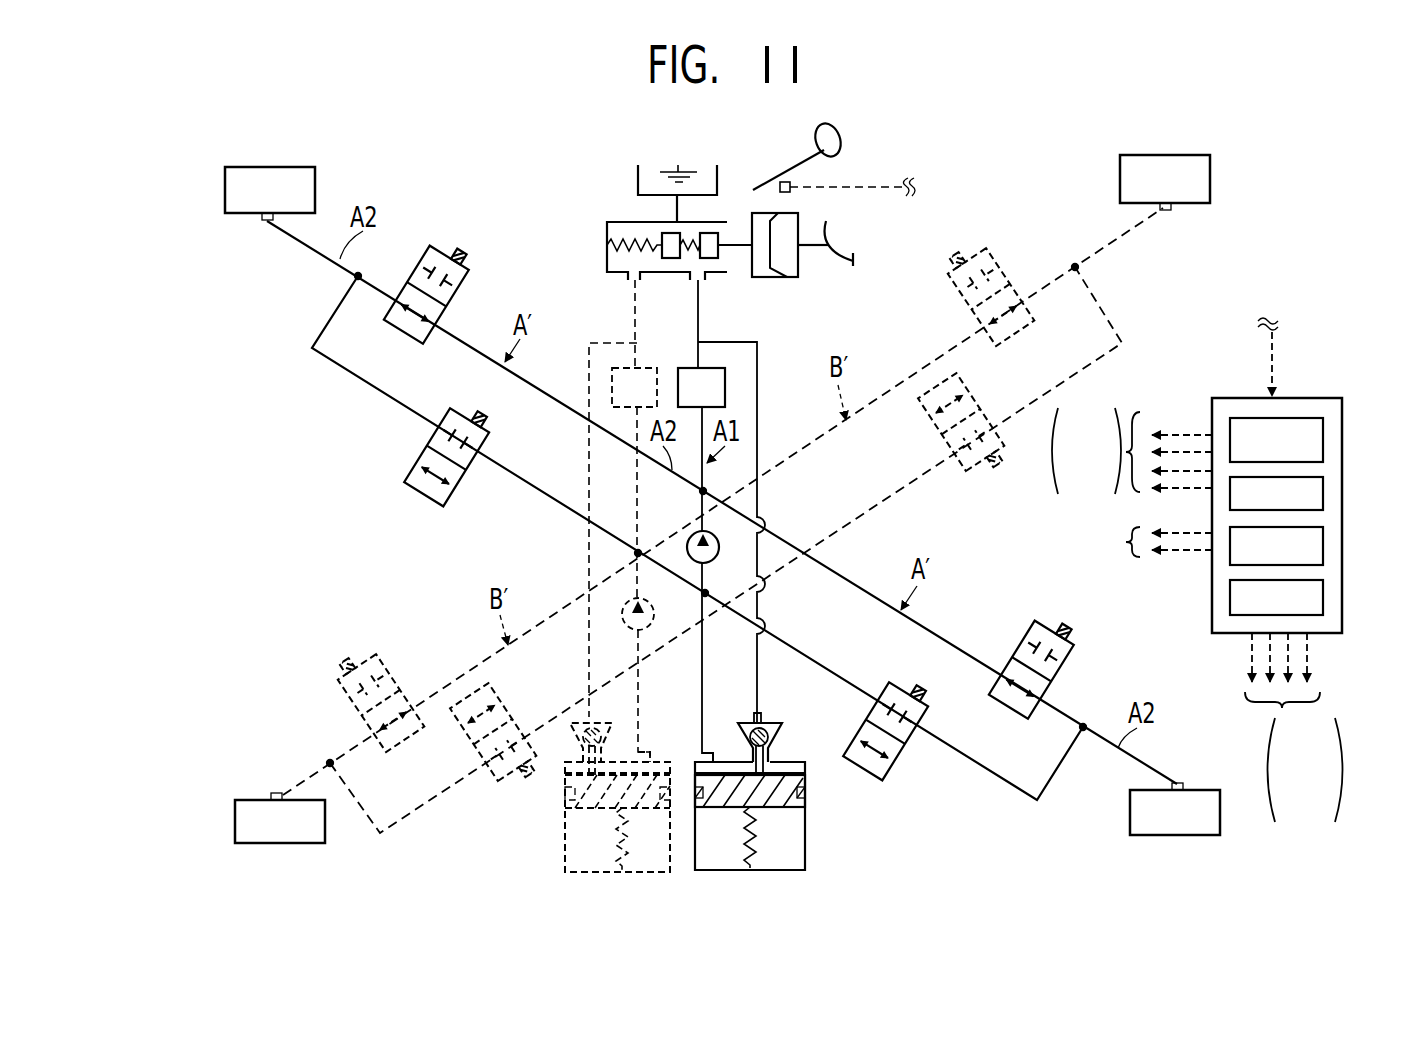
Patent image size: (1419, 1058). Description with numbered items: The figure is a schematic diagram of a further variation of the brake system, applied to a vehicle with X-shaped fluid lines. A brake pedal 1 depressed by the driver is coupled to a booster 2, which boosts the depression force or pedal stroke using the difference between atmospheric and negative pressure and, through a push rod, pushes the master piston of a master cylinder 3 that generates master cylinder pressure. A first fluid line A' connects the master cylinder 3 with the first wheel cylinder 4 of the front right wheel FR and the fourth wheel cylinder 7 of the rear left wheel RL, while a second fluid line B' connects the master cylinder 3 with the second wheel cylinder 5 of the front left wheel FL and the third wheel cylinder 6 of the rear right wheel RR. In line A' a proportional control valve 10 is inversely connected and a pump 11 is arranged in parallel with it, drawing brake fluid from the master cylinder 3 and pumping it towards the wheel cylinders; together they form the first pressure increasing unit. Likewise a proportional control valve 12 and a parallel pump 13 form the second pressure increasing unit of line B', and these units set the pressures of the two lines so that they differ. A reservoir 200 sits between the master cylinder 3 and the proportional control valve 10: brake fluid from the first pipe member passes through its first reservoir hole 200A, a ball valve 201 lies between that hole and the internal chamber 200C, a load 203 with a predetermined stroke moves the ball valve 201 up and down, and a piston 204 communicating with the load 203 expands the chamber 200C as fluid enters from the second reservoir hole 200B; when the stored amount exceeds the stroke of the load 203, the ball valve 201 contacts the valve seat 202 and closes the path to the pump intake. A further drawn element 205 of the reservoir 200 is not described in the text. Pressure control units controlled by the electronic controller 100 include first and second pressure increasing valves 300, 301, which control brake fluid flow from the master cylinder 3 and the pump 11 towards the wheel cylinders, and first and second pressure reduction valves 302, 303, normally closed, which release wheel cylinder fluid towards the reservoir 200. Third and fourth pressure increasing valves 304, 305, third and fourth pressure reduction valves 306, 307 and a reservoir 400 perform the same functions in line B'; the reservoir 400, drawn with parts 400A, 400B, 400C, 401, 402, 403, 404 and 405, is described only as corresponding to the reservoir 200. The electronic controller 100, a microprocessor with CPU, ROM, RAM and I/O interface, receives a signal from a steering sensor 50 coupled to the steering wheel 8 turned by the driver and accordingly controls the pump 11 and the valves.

The brake pedal 1 is at (856, 250).
The booster 2 is at (790, 278).
The master cylinder 3 is at (638, 180).
The first wheel cylinder 4 is at (262, 222).
The second wheel cylinder 5 is at (273, 795).
The third wheel cylinder 6 is at (1172, 211).
The fourth wheel cylinder 7 is at (1188, 783).
The steering wheel 8 is at (841, 143).
The steering sensor 50 is at (795, 190).
The proportional control valve 10 is at (692, 367).
The pump 11 is at (720, 539).
The proportional control valve 12 is at (644, 366).
The pump 13 is at (655, 609).
The electronic controller 100 is at (1310, 397).
The reservoir 200 is at (767, 787).
The first reservoir hole 200A is at (757, 714).
The second reservoir hole 200B is at (707, 748).
The internal chamber 200C is at (805, 772).
The ball valve 201 is at (778, 722).
The valve seat 202 is at (769, 737).
The load 203 is at (766, 752).
The piston 204 is at (785, 802).
The spring 205 is at (748, 845).
The first pressure increasing valve 300 is at (1020, 650).
The second pressure increasing valve 301 is at (468, 283).
The first pressure reduction valve 302 is at (912, 742).
The second pressure reduction valve 303 is at (460, 494).
The third pressure increasing valve 304 is at (336, 684).
The fourth pressure increasing valve 305 is at (990, 250).
The third pressure reduction valve 306 is at (470, 752).
The fourth pressure reduction valve 307 is at (935, 438).
The reservoir 400 is at (581, 805).
The inlet port 400A is at (575, 770).
The port 400B is at (700, 752).
The cylinder 400C is at (595, 830).
The valve seat 401 is at (593, 725).
The ball valve 402 is at (588, 746).
The piston 403 is at (585, 795).
The rod 404 is at (592, 775).
The spring 405 is at (630, 858).